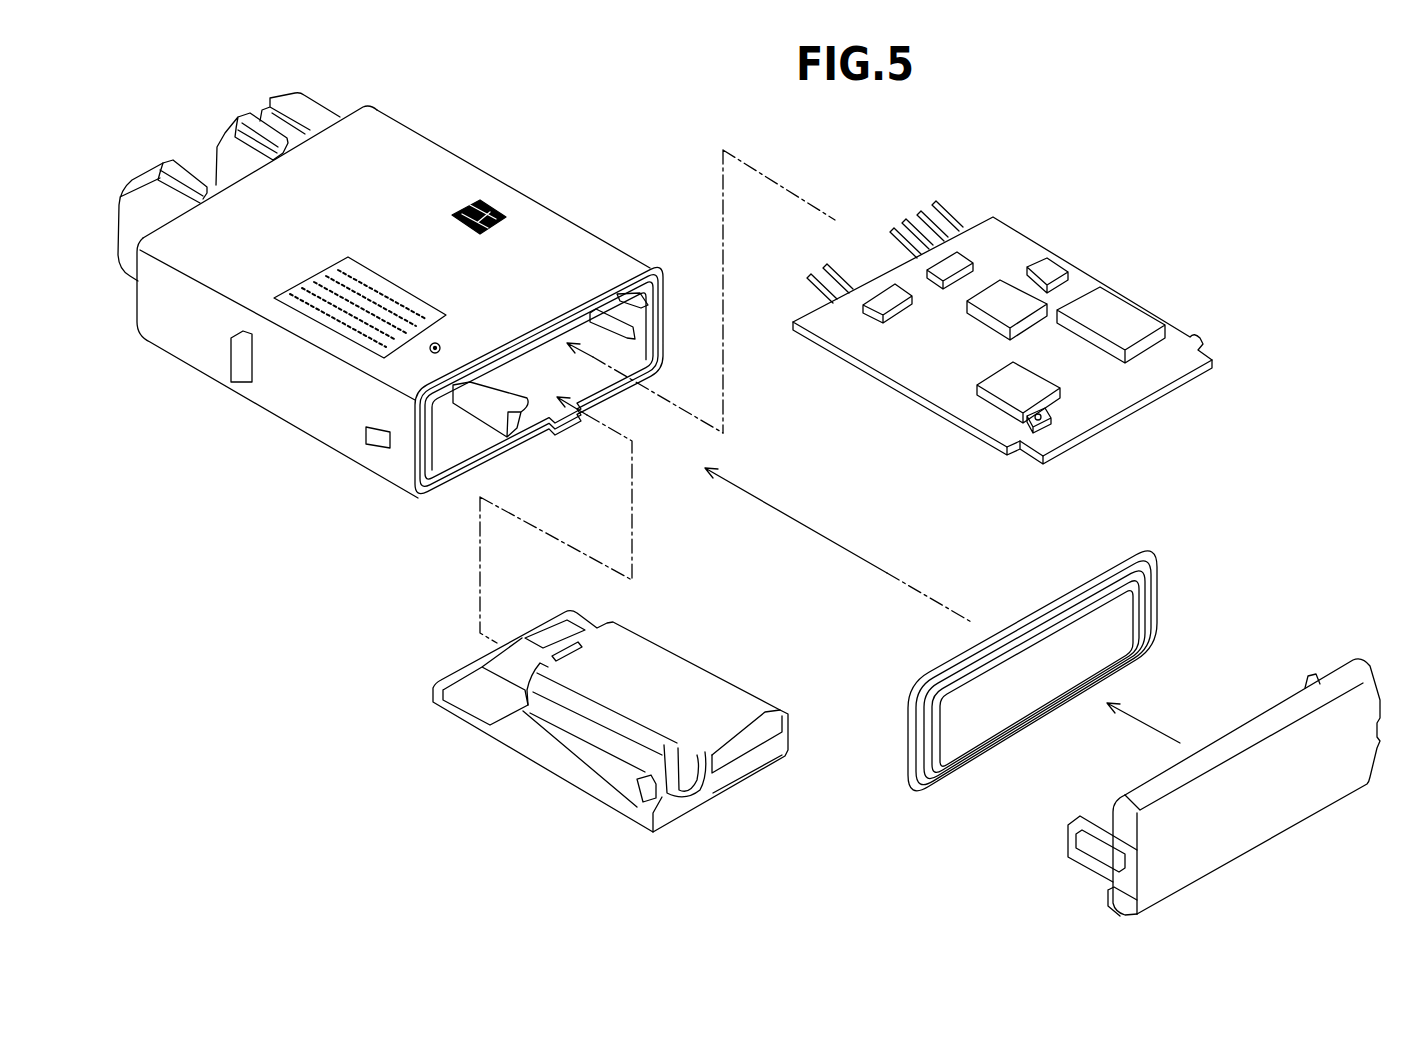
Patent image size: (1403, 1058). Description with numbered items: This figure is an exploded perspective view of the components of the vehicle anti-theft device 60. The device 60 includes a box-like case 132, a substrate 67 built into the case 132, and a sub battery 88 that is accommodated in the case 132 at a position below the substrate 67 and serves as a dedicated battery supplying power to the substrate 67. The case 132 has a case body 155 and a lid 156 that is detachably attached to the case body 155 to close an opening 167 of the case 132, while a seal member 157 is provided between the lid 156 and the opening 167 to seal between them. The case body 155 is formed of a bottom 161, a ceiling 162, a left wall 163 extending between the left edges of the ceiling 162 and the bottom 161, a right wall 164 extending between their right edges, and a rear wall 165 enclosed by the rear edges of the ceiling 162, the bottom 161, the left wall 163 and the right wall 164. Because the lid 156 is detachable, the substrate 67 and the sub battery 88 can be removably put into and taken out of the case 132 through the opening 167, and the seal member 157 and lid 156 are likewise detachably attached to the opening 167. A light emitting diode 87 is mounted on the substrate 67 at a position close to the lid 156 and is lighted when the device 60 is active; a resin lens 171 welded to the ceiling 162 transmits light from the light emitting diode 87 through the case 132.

The vehicle anti-theft device 60 is at (1184, 158).
The substrate 67 is at (1012, 232).
The light emitting diode 87 is at (1033, 400).
The sub battery 88 is at (552, 798).
The case 132 is at (569, 101).
The case body 155 is at (475, 146).
The lid 156 is at (1331, 651).
The seal member 157 is at (1165, 566).
The bottom 161 is at (507, 465).
The ceiling 162 is at (391, 147).
The left wall 163 is at (545, 207).
The right wall 164 is at (180, 318).
The rear wall 165 is at (347, 108).
The opening 167 is at (660, 317).
The resin lens 171 is at (437, 323).